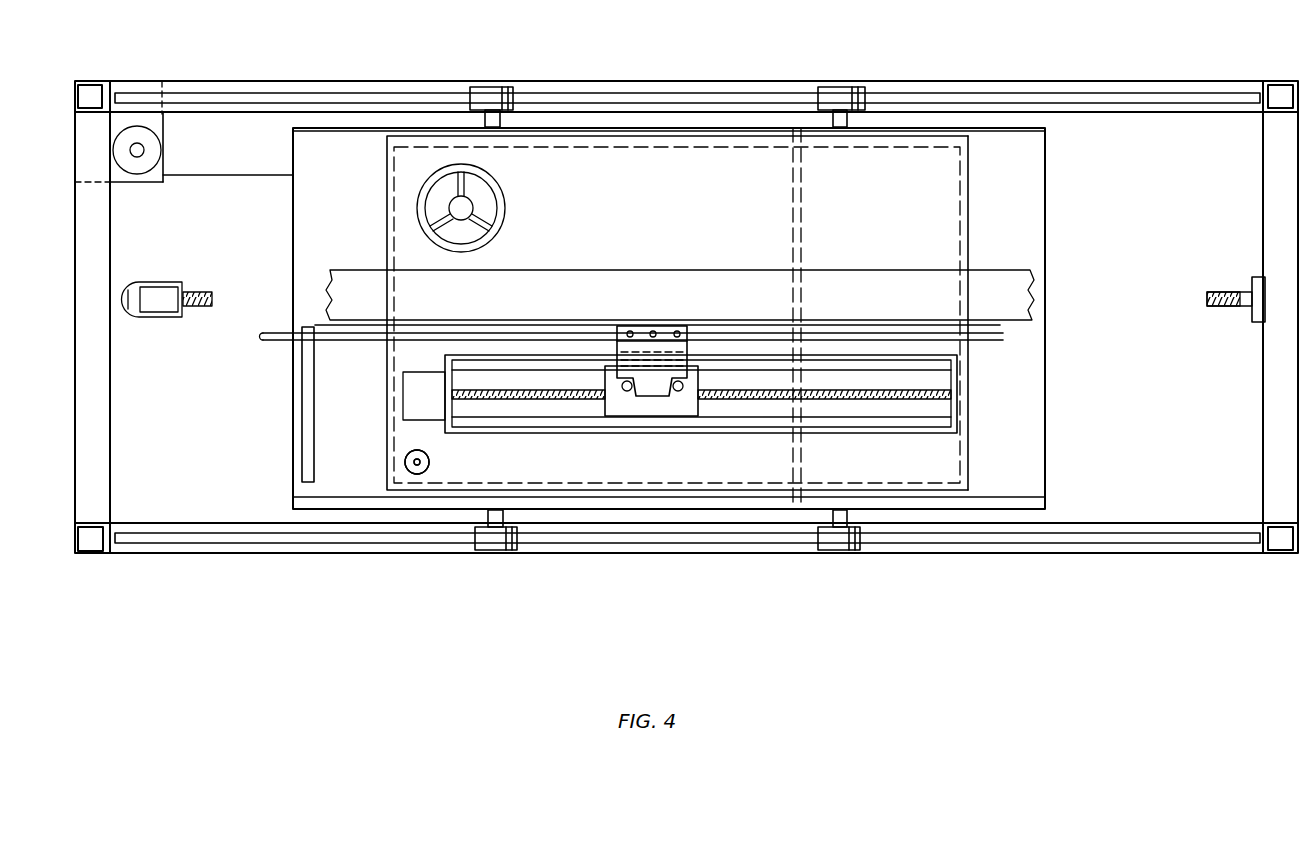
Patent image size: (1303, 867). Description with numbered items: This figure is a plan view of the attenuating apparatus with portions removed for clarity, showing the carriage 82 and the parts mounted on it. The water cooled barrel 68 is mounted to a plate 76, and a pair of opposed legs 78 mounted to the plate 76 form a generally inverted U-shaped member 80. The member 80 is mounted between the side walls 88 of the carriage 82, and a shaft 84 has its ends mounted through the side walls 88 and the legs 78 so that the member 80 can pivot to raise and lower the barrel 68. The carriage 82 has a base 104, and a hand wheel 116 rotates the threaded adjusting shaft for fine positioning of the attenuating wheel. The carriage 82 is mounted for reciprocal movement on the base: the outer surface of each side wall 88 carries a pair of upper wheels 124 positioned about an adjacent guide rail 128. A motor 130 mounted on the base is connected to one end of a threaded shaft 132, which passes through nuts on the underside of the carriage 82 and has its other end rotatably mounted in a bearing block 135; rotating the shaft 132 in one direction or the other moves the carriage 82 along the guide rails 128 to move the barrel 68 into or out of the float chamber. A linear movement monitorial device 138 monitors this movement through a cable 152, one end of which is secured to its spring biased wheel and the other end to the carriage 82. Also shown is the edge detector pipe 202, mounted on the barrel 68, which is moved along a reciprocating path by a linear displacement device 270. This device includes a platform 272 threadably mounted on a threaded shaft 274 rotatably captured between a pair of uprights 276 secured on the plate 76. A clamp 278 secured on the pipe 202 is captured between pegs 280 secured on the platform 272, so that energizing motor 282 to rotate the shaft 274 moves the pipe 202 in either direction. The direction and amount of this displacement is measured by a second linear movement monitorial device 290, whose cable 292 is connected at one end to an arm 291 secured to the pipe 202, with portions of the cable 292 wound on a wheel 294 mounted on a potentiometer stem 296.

The linear movement monitorial device 138 is at (150, 126).
The guide rail 128 is at (400, 92).
The upper wheels 124 is at (493, 87).
The plate 76 is at (865, 165).
The carriage 82 is at (940, 125).
The side walls 88 is at (1018, 128).
The cable 152 is at (222, 173).
The hand wheel 116 is at (500, 185).
The shaft 84 is at (793, 175).
The legs 78 is at (942, 140).
The inverted U-shaped member 80 is at (978, 208).
The base of the carriage 104 is at (1025, 254).
The barrel 68 is at (575, 268).
The motor 130 is at (150, 283).
The threaded shaft 132 is at (205, 291).
The bearing block 135 is at (1250, 283).
The clamp 278 is at (638, 327).
The motor 282 is at (443, 356).
The uprights 276 is at (445, 399).
The potentiometer stem 296 is at (410, 452).
The cable 292 is at (405, 462).
The wheel 294 is at (405, 467).
The arm 291 is at (302, 432).
The linear movement monitorial device 290 is at (432, 462).
The pegs 280 is at (678, 392).
The platform 272 is at (698, 416).
The threaded shaft 274 is at (825, 400).
The pipe 202 is at (1000, 338).
The linear displacement device 270 is at (978, 428).